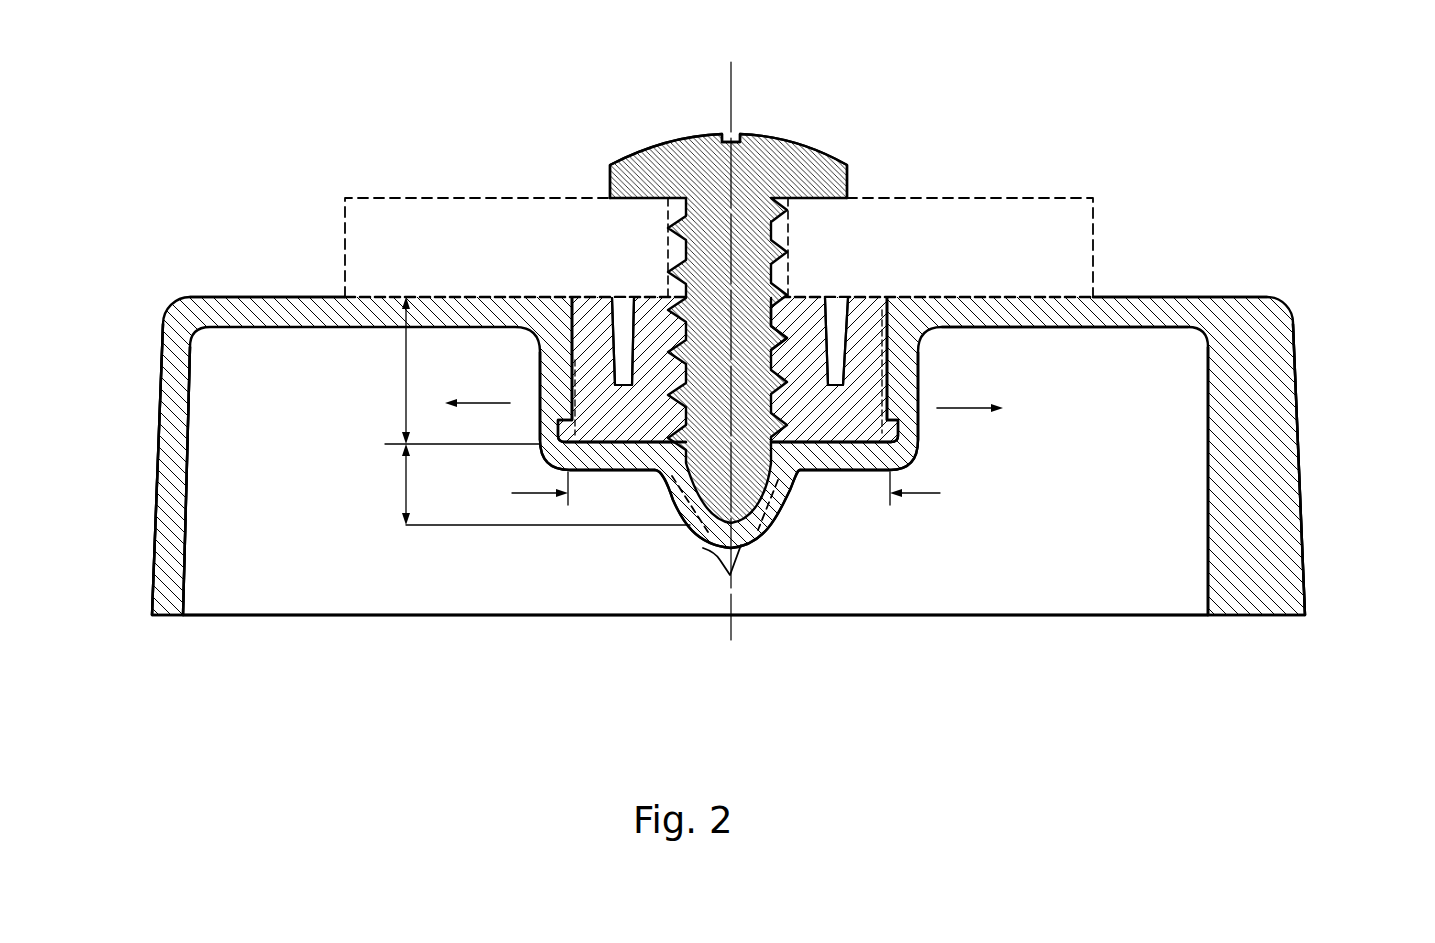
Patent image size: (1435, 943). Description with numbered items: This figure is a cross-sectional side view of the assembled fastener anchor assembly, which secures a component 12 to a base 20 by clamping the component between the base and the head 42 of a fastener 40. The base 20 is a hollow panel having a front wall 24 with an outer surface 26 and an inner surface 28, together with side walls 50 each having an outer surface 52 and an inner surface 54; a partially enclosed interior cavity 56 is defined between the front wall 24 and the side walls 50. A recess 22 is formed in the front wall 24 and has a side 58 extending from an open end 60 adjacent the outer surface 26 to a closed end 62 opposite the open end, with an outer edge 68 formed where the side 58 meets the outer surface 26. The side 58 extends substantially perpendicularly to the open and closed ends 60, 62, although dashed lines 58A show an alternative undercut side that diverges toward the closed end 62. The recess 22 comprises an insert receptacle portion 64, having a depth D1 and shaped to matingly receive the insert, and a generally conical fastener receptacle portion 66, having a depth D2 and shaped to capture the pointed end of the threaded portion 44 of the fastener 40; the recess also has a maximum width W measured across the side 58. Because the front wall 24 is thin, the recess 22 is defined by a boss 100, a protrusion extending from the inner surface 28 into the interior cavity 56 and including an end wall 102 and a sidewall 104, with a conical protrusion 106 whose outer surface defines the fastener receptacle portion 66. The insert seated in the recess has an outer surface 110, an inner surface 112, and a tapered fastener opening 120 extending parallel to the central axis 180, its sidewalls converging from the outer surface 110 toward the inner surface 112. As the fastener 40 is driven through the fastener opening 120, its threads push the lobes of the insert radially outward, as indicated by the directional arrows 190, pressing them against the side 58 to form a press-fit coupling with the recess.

The component 12 is at (930, 198).
The base 20 is at (1251, 287).
The recess 22 is at (658, 415).
The front wall 24 is at (1150, 313).
The outer surface 26 is at (283, 295).
The inner surface 28 is at (1107, 328).
The fastener 40 is at (788, 130).
The head 42 is at (803, 176).
The threaded portion 44 is at (732, 391).
The side walls 50 is at (173, 493).
The outer surface 52 is at (180, 360).
The inner surface 54 is at (190, 433).
The interior cavity 56 is at (1098, 514).
The side 58 is at (575, 357).
The dashed lines 58A is at (572, 382).
The open end 60 is at (678, 300).
The closed end 62 is at (622, 440).
The insert receptacle portion 64 is at (925, 341).
The fastener receptacle portion 66 is at (790, 470).
The outer edge 68 is at (568, 297).
The boss 100 is at (931, 439).
The end wall 102 is at (838, 458).
The sidewall 104 is at (903, 383).
The protrusion 106 is at (740, 547).
The outer surface 110 is at (793, 300).
The inner surface 112 is at (660, 448).
The fastener opening 120 is at (778, 310).
The central axis 180 is at (740, 92).
The directional arrows 190 is at (468, 407).
The depth of the insert receptacle portion D1 is at (405, 378).
The depth of the fastener receptacle portion D2 is at (405, 492).
The maximum width W is at (920, 492).